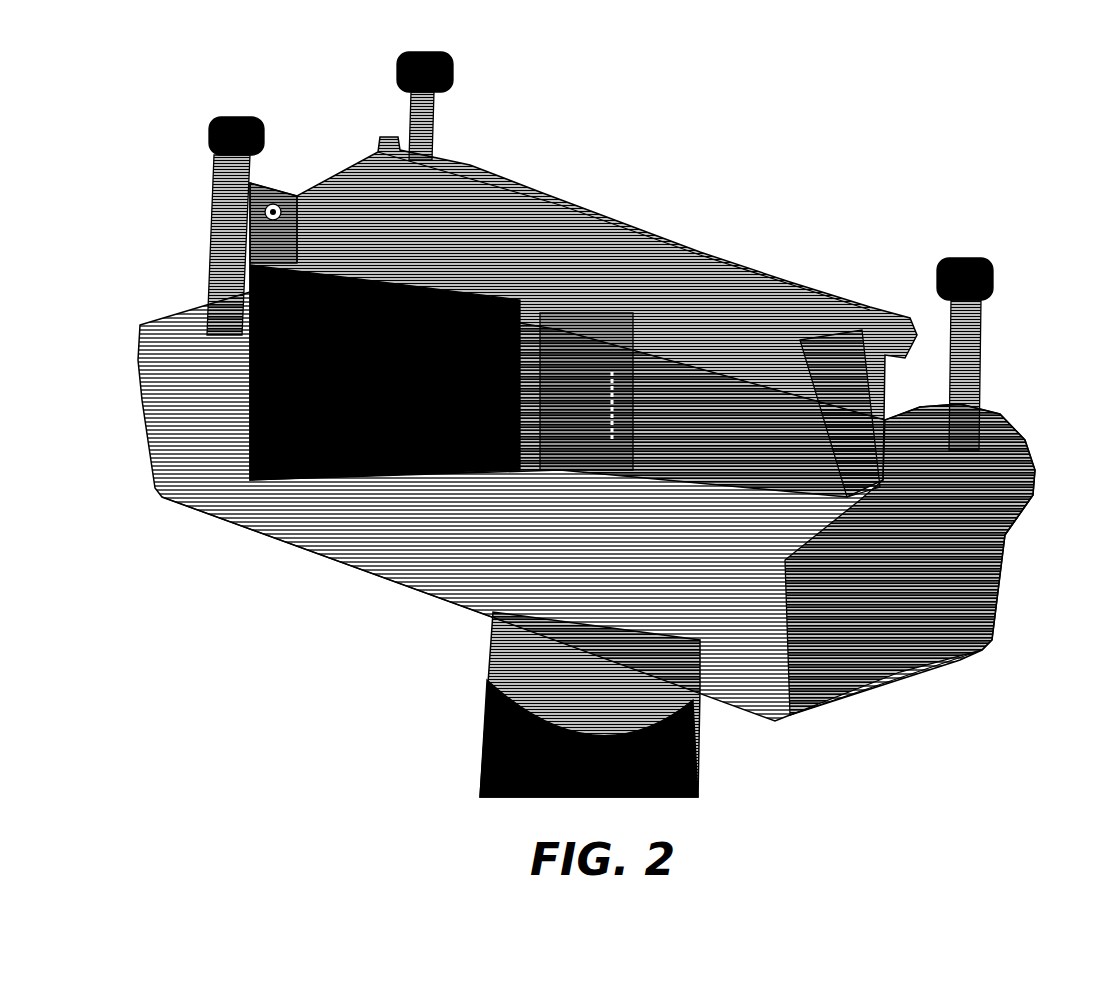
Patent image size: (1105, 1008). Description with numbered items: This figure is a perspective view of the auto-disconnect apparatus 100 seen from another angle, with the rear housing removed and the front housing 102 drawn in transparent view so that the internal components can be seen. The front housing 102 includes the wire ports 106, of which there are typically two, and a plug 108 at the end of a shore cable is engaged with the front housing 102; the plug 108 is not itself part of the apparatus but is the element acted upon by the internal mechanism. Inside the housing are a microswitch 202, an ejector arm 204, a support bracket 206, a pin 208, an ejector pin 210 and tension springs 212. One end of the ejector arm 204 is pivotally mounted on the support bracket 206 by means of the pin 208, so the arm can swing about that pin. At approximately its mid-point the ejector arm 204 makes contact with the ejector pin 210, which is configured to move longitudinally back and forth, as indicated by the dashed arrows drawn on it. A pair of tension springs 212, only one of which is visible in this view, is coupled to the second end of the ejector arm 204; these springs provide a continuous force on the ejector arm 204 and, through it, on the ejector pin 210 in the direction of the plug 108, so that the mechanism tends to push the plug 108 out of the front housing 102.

The auto-disconnect apparatus 100 is at (848, 186).
The front housing 102 is at (268, 533).
The wire ports 106 is at (993, 415).
The plug 108 is at (477, 737).
The microswitch 202 is at (403, 380).
The ejector arm 204 is at (538, 197).
The support bracket 206 is at (265, 183).
The pin 208 is at (263, 215).
The ejector pin 210 is at (725, 272).
The tension springs 212 is at (795, 287).